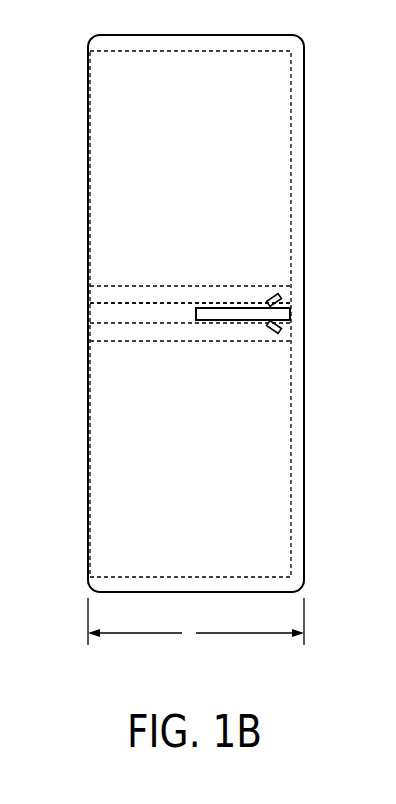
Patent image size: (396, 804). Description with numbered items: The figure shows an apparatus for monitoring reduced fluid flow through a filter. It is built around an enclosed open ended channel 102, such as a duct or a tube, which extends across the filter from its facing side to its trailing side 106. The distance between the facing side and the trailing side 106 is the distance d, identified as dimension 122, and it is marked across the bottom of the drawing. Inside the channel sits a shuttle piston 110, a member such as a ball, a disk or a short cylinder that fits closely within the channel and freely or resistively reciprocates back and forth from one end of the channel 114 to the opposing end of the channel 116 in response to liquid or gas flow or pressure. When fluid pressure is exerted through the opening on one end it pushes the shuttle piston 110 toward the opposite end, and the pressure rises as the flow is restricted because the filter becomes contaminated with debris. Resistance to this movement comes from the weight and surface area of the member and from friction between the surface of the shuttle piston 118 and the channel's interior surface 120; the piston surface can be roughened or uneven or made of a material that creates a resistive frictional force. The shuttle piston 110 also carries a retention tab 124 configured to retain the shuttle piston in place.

The open ended channel 102 is at (103, 311).
The trailing side 106 is at (328, 126).
The shuttle piston 110 is at (292, 311).
The one end of the channel 114 is at (70, 300).
The opposing end of the channel 116 is at (322, 316).
The surface of the shuttle piston 118 is at (256, 312).
The channel's interior surface 120 is at (155, 305).
The distance d 122 is at (200, 645).
The retention tab 124 is at (274, 333).